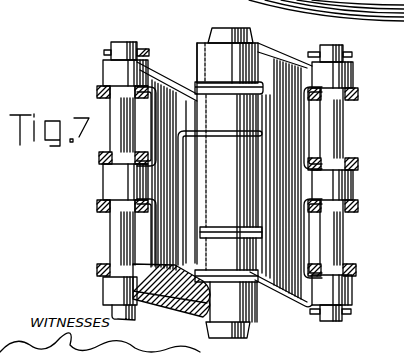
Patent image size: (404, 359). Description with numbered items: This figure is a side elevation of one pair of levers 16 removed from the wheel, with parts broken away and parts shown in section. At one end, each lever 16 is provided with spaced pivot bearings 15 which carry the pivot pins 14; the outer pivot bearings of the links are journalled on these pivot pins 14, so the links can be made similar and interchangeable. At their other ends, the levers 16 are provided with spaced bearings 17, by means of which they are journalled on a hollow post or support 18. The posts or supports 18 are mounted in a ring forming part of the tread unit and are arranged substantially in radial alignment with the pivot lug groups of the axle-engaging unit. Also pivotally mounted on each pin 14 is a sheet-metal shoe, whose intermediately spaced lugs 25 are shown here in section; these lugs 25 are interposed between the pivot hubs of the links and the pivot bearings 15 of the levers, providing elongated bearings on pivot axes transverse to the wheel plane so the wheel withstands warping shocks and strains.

The pivot pin 14 is at (138, 43).
The pivot bearing 15 is at (115, 73).
The lever 16 is at (287, 158).
The spaced bearing 17 is at (218, 118).
The hollow post or support 18 is at (224, 37).
The intermediately spaced lug 25 is at (98, 92).